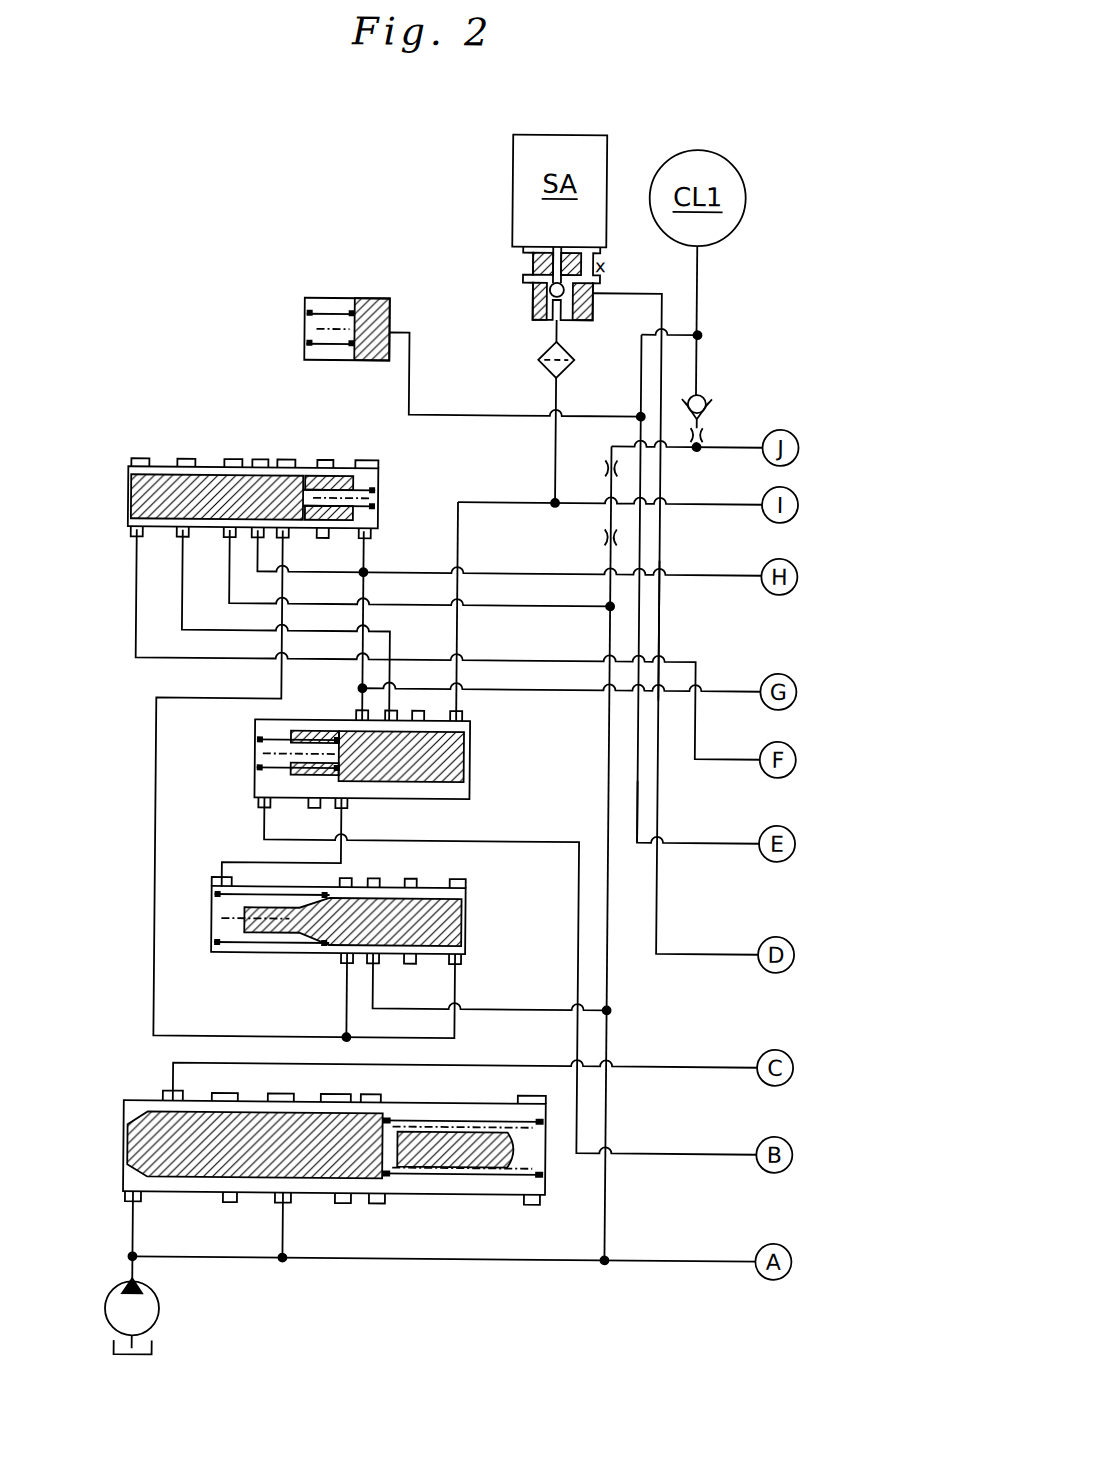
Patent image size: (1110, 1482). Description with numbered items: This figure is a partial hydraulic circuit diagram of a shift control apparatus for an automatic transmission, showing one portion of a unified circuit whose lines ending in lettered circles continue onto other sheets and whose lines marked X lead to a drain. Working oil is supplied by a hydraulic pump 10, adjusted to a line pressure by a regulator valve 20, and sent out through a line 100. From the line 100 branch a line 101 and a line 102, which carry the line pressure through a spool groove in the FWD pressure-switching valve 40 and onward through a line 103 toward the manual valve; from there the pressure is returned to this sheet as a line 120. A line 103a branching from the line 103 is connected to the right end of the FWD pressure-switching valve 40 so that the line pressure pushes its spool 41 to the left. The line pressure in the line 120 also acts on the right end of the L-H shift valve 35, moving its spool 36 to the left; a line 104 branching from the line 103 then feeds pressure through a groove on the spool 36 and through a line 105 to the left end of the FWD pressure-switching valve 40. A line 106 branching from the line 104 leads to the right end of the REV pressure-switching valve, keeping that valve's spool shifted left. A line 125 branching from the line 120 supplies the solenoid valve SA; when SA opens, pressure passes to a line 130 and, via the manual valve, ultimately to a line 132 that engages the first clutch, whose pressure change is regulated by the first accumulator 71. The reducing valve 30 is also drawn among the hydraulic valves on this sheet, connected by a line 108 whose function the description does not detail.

The hydraulic pump 10 is at (168, 1312).
The regulator valve 20 is at (151, 1100).
The reducing valve 30 is at (483, 903).
The L-H shift valve 35 is at (399, 758).
The spool 36 is at (466, 766).
The FWD pressure-switching valve 40 is at (292, 497).
The spool 41 is at (208, 481).
The first accumulator 71 is at (364, 300).
The line 100 is at (424, 1262).
The line 101 is at (609, 978).
The line 102 is at (486, 612).
The line 103 is at (488, 572).
The line 103a is at (363, 557).
The line 104 is at (359, 678).
The line 105 is at (184, 606).
The line 106 is at (488, 692).
The oil passage 108 is at (250, 862).
The line 120 is at (688, 504).
The line 125 is at (552, 458).
The line 130 is at (658, 632).
The line 132 is at (697, 842).